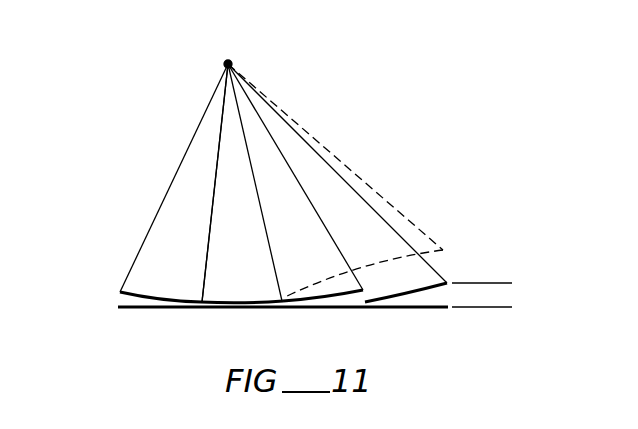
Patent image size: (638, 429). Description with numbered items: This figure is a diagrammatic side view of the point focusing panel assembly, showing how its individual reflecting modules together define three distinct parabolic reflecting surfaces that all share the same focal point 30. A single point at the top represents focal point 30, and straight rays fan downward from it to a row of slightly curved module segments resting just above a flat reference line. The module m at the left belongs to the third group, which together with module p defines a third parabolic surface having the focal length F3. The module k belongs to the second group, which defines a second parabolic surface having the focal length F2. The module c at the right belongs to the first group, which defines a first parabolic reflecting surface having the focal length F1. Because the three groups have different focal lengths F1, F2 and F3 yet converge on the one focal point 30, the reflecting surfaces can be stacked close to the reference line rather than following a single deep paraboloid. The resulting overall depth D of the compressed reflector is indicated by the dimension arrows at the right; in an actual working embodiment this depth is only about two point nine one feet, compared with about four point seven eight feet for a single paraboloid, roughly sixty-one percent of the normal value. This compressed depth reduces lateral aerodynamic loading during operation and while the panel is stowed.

The focal point 30 is at (222, 63).
The focal length of first parabolic reflecting surface F1 is at (314, 148).
The focal length of second parabolic reflecting surface F2 is at (323, 218).
The focal length of third parabolic reflecting surface F3 is at (212, 207).
The reflecting module m is at (157, 291).
The reflecting module p is at (243, 300).
The reflecting module k is at (308, 298).
The reflecting module c is at (394, 292).
The overall depth D is at (505, 250).